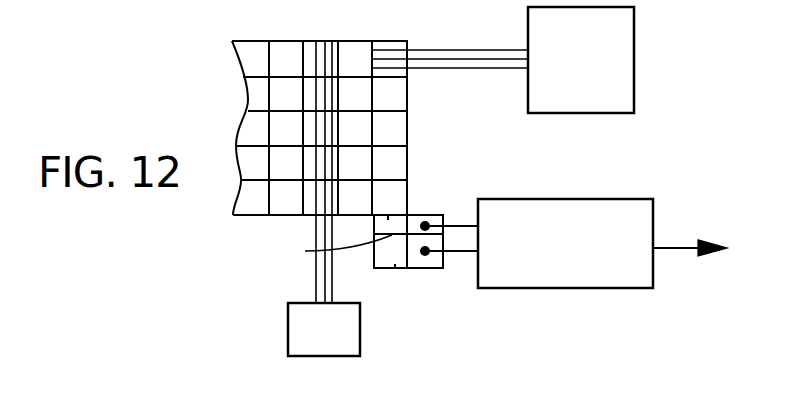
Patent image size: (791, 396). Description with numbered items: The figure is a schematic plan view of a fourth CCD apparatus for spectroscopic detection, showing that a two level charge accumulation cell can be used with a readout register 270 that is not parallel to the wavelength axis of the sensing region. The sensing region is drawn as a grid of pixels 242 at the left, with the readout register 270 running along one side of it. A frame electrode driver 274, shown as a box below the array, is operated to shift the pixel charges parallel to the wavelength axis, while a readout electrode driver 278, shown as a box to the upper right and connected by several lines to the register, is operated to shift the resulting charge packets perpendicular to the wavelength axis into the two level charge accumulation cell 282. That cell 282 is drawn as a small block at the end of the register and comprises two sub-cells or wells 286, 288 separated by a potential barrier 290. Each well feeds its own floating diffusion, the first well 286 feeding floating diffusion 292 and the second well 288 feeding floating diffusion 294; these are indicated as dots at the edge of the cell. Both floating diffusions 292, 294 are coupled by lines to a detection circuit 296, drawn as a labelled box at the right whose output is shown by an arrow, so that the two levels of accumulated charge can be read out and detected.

The pixel array 242 is at (279, 207).
The readout register 270 is at (392, 119).
The frame electrode driver 274 is at (304, 342).
The readout electrode driver 278 is at (553, 65).
The two level charge accumulation cell 282 is at (382, 270).
The well 286 is at (388, 220).
The well 288 is at (395, 270).
The potential barrier 290 is at (327, 251).
The floating diffusion 292 is at (435, 215).
The floating diffusion 294 is at (440, 264).
The detection circuit 296 is at (548, 205).